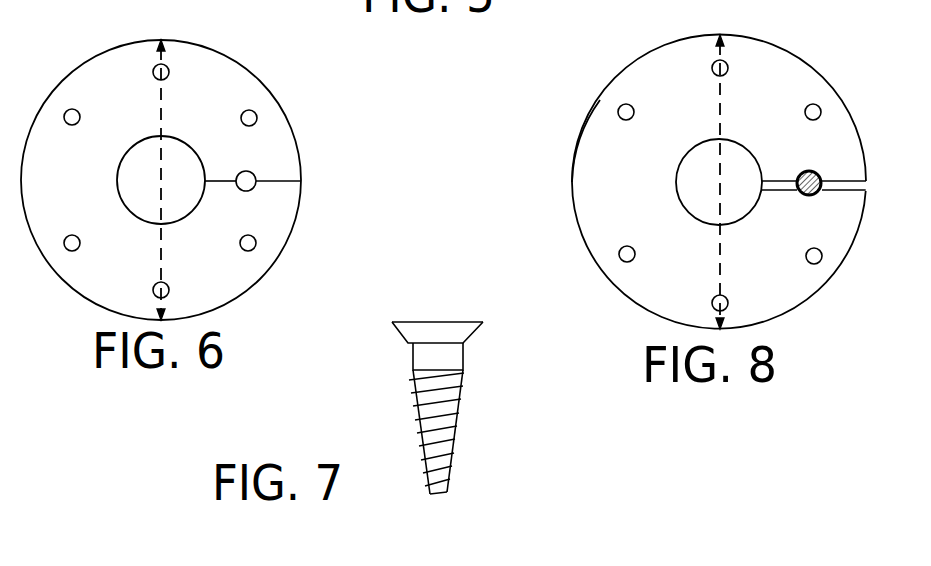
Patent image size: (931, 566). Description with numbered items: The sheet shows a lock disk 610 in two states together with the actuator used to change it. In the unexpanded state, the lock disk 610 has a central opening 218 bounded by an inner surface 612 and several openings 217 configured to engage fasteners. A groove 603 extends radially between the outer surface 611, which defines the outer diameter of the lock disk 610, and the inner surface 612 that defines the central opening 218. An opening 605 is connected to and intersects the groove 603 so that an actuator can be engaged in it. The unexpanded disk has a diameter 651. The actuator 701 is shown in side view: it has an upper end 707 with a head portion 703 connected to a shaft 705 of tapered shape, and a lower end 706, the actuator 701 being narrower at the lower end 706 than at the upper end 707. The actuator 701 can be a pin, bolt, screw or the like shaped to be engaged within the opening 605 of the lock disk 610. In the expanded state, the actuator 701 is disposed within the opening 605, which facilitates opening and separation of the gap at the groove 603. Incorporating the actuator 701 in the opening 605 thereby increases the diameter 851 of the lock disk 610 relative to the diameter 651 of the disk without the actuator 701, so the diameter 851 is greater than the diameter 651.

In FIG. 6, the openings 217 is at (169, 72).
In FIG. 8, the openings 217 is at (712, 67).
In FIG. 6, the central opening 218 is at (213, 122).
In FIG. 8, the central opening 218 is at (767, 121).
In FIG. 6, the groove 603 is at (317, 172).
In FIG. 8, the groove 603 is at (814, 161).
In FIG. 6, the opening 605 is at (289, 204).
In FIG. 8, the opening 605 is at (806, 212).
In FIG. 6, the lock disk 610 is at (208, 180).
In FIG. 8, the lock disk 610 is at (678, 181).
In FIG. 6, the outer surface 611 is at (262, 161).
In FIG. 8, the outer surface 611 is at (537, 153).
In FIG. 6, the inner surface 612 is at (108, 170).
In FIG. 8, the inner surface 612 is at (653, 175).
In FIG. 6, the diameter 651 is at (220, 291).
In FIG. 7, the actuator 701 is at (450, 400).
In FIG. 8, the actuator 701 is at (829, 199).
In FIG. 7, the head portion 703 is at (464, 346).
In FIG. 7, the shaft 705 is at (489, 432).
In FIG. 7, the lower end 706 is at (398, 512).
In FIG. 7, the upper end 707 is at (448, 295).
In FIG. 8, the diameter 851 is at (665, 261).